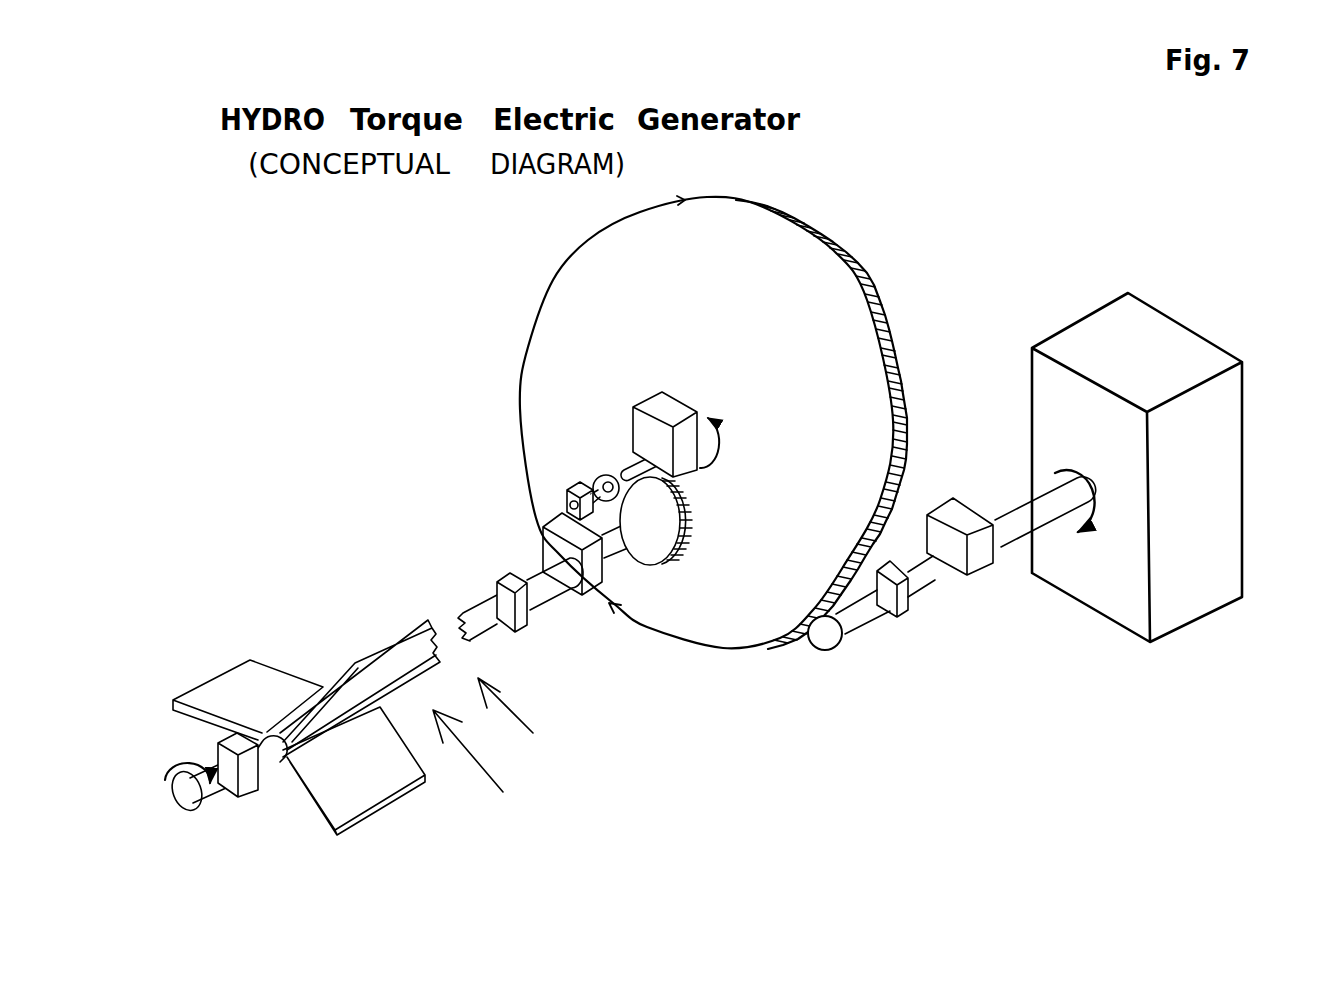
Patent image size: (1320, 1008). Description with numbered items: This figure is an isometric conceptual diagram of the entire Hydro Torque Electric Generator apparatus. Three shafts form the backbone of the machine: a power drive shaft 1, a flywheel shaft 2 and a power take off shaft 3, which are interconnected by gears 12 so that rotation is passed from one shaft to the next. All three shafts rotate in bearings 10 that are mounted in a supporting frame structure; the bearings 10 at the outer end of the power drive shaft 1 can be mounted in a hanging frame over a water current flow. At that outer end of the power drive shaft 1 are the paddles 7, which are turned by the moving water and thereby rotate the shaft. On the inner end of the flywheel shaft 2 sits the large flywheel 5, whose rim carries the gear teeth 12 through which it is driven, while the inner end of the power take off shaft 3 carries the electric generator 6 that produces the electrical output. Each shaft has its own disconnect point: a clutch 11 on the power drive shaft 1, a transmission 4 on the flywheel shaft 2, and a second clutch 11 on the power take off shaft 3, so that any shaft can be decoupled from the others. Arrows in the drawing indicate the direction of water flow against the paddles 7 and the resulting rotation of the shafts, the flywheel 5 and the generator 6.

The power drive shaft 1 is at (482, 600).
The flywheel shaft 2 is at (630, 461).
The power take off shaft 3 is at (1010, 503).
The transmission 4 is at (688, 470).
The flywheel 5 is at (603, 332).
The electric generator 6 is at (1103, 308).
The paddles 7 is at (390, 807).
The bearings 10 is at (230, 795).
The clutch 11 is at (578, 598).
The gears 12 is at (885, 308).